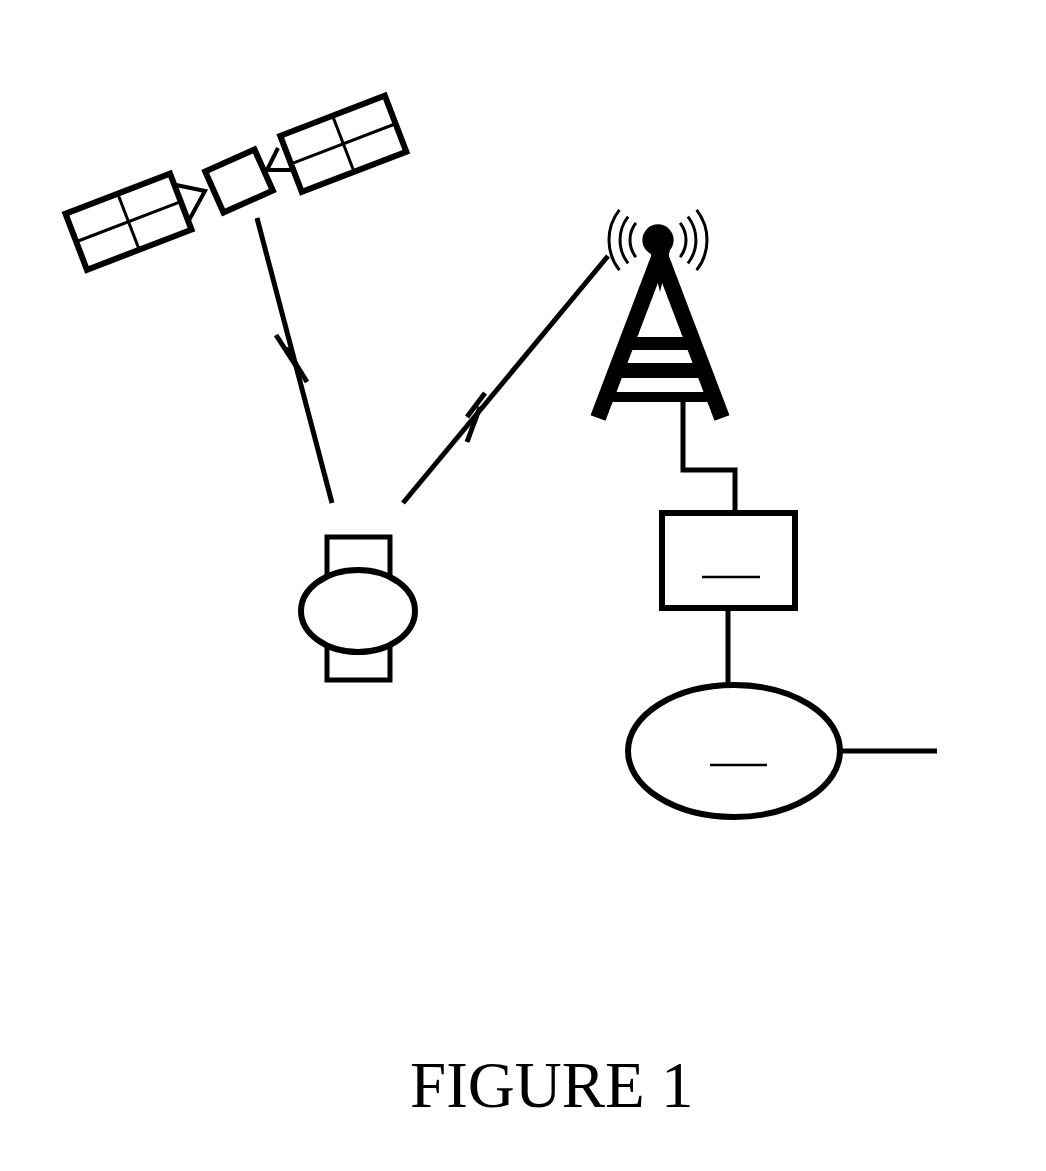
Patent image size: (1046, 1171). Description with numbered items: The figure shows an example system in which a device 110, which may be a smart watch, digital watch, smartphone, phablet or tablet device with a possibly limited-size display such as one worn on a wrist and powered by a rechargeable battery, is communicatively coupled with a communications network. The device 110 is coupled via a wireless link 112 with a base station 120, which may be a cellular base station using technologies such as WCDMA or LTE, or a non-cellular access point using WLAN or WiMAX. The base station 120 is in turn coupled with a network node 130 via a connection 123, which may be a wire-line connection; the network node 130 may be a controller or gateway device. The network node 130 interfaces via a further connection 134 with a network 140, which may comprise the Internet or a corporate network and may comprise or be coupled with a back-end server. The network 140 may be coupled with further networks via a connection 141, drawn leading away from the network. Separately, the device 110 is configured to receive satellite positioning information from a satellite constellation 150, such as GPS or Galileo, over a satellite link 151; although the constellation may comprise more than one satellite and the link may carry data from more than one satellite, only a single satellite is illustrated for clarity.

The satellite constellation 150 is at (243, 147).
The satellite link 151 is at (300, 350).
The wireless link 112 is at (474, 405).
The device 110 is at (325, 652).
The base station 120 is at (702, 367).
The connection 123 is at (737, 470).
The network node 130 is at (728, 560).
The connection 134 is at (727, 655).
The network 140 is at (734, 751).
The connection 141 is at (875, 753).